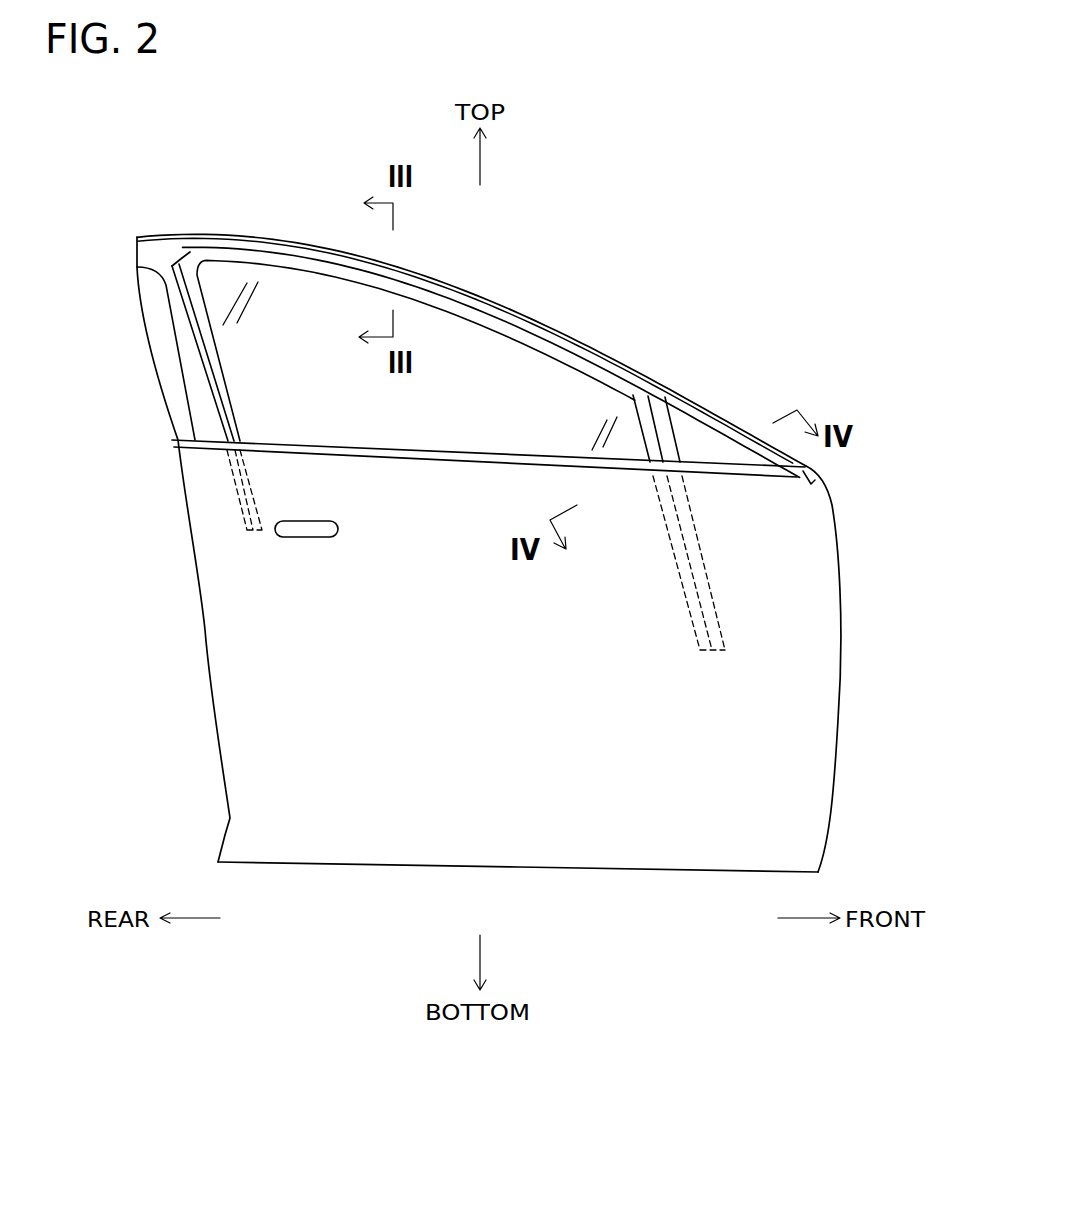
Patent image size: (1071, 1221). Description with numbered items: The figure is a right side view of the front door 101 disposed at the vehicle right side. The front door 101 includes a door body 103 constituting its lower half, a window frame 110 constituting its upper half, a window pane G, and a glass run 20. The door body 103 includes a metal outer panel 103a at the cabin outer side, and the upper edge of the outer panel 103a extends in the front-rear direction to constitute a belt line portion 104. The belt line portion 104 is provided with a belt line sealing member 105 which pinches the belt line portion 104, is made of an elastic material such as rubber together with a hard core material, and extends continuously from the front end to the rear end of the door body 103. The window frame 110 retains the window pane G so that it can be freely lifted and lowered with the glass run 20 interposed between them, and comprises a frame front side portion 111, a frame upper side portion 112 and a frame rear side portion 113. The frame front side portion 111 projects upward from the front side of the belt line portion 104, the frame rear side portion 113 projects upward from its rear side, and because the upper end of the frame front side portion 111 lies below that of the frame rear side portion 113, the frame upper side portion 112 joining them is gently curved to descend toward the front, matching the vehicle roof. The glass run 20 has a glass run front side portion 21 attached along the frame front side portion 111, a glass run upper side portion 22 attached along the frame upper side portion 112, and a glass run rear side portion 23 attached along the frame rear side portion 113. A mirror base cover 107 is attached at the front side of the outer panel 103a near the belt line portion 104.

The glass run 20 is at (199, 256).
The glass run front side portion 21 is at (648, 420).
The glass run upper side portion 22 is at (270, 255).
The glass run rear side portion 23 is at (207, 383).
The front door 101 is at (182, 559).
The door body 103 is at (788, 752).
The outer panel 103a is at (362, 867).
The belt line portion 104 is at (443, 450).
The belt line sealing member 105 is at (330, 450).
The mirror base cover 107 is at (715, 447).
The window frame 110 is at (520, 298).
The frame front side portion 111 is at (670, 428).
The frame upper side portion 112 is at (315, 243).
The frame rear side portion 113 is at (180, 340).
The window pane G is at (527, 390).